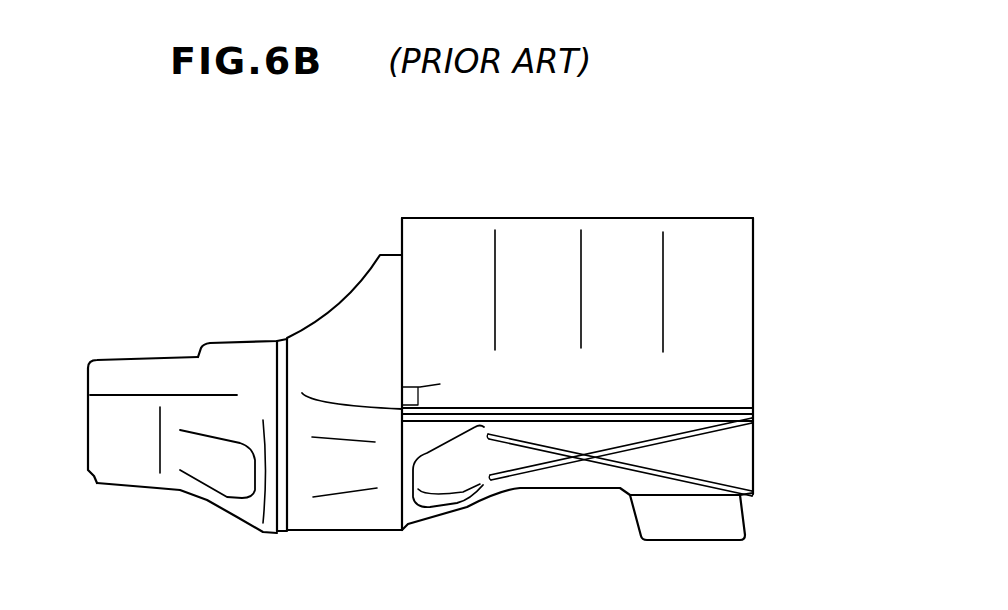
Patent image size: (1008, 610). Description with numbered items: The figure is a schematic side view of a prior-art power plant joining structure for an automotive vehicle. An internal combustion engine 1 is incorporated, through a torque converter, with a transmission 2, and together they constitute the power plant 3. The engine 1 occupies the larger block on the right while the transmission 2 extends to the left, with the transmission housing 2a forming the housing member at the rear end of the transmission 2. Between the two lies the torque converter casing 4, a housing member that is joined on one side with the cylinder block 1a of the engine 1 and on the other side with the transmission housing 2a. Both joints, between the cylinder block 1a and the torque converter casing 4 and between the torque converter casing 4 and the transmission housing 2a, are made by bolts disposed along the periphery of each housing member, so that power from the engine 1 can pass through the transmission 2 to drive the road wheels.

The internal combustion engine 1 is at (631, 215).
The cylinder block 1a is at (442, 362).
The transmission 2 is at (196, 350).
The transmission housing 2a is at (252, 363).
The power plant 3 is at (466, 204).
The torque converter casing 4 is at (356, 306).